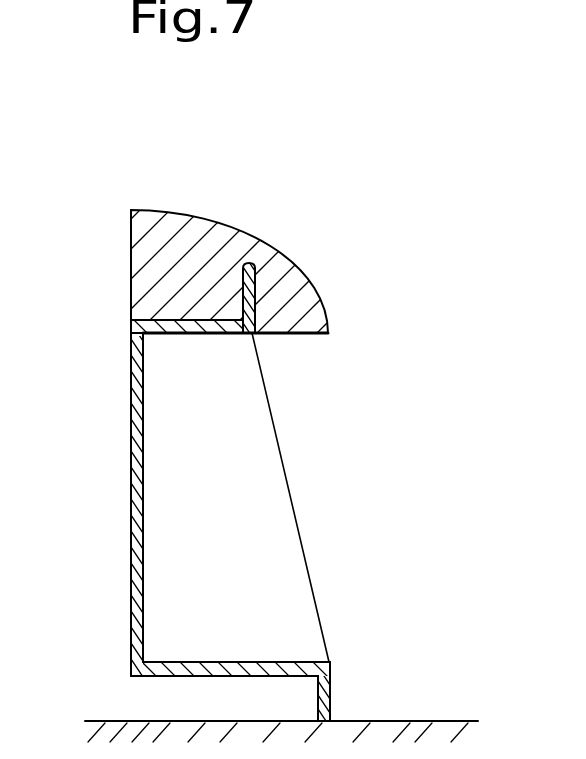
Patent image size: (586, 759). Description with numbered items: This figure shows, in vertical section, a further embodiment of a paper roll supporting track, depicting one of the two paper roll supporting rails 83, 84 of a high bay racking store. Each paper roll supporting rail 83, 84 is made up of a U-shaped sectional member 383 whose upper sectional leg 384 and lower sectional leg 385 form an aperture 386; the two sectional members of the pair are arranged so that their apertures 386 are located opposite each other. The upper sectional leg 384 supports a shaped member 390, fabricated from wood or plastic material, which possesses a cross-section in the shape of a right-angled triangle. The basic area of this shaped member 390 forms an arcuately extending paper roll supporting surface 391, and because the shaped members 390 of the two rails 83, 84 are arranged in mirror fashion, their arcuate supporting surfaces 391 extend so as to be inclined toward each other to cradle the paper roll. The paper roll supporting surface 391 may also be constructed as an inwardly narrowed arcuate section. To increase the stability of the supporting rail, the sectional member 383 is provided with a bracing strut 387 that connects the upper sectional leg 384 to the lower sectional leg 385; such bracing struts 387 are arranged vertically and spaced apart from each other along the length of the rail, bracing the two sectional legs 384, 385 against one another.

The paper roll supporting rail 83 is at (250, 265).
The paper roll supporting rail 84 is at (230, 265).
The shaped member 390 is at (160, 278).
The paper roll supporting surface 391 is at (242, 237).
The U-shaped sectional member 383 is at (184, 531).
The upper sectional leg 384 is at (172, 336).
The lower sectional leg 385 is at (163, 660).
The aperture 386 is at (135, 493).
The bracing strut 387 is at (280, 508).